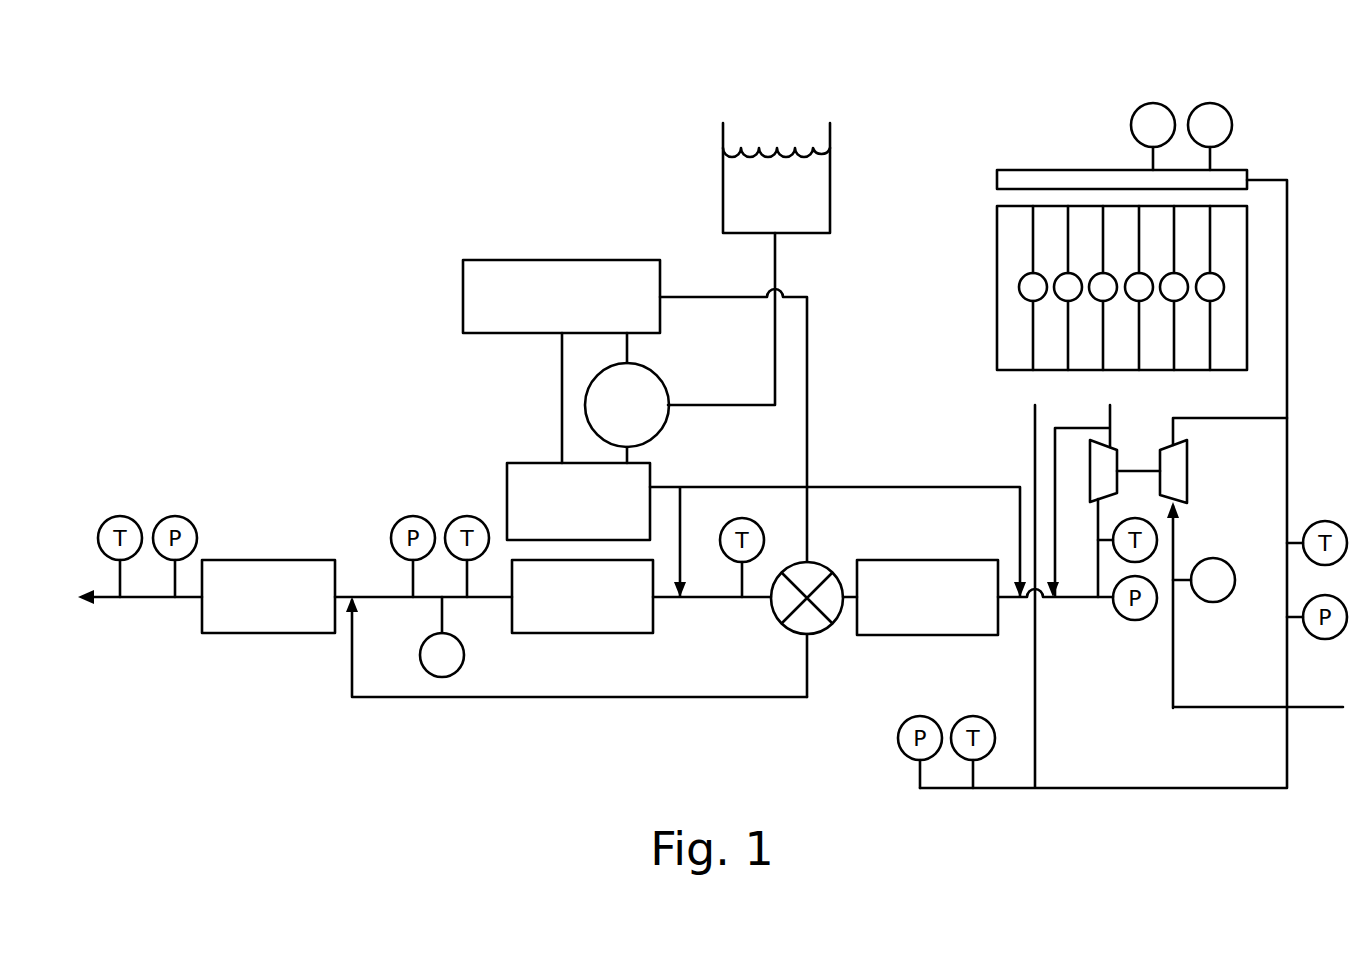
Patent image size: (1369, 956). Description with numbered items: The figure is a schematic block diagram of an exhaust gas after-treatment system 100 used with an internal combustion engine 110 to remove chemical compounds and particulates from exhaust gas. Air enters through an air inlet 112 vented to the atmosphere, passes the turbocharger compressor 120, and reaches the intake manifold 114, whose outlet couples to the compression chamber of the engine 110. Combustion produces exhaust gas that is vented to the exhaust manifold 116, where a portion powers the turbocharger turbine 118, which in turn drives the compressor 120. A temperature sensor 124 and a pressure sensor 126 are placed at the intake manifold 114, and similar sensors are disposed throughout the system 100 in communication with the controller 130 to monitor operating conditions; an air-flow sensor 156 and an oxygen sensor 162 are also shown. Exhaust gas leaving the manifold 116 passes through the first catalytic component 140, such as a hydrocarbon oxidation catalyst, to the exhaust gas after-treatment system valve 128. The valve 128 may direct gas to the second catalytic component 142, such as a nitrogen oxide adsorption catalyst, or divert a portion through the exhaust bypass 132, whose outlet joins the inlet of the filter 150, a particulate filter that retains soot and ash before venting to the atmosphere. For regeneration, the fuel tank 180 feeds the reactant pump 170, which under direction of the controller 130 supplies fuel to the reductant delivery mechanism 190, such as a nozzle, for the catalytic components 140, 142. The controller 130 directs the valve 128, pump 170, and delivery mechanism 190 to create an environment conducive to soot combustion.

The exhaust gas after-treatment system 100 is at (246, 131).
The internal combustion engine 110 is at (1224, 287).
The air inlet 112 is at (1330, 708).
The intake manifold 114 is at (1065, 170).
The exhaust manifold 116 is at (1145, 407).
The turbocharger turbine 118 is at (1094, 493).
The turbocharger compressor 120 is at (1180, 466).
The temperature sensors 124 is at (1138, 110).
The pressure sensors 126 is at (1232, 125).
The exhaust gas after-treatment system valve 128 is at (830, 622).
The controller 130 is at (561, 296).
The exhaust bypass 132 is at (730, 698).
The first catalytic component 140 is at (935, 636).
The second catalytic component 142 is at (580, 634).
The filter 150 is at (271, 560).
The air-flow sensors 156 is at (1216, 602).
The oxygen sensor 162 is at (464, 655).
The reactant pump 170 is at (627, 405).
The fuel tank 180 is at (723, 182).
The reductant delivery mechanism 190 is at (529, 463).